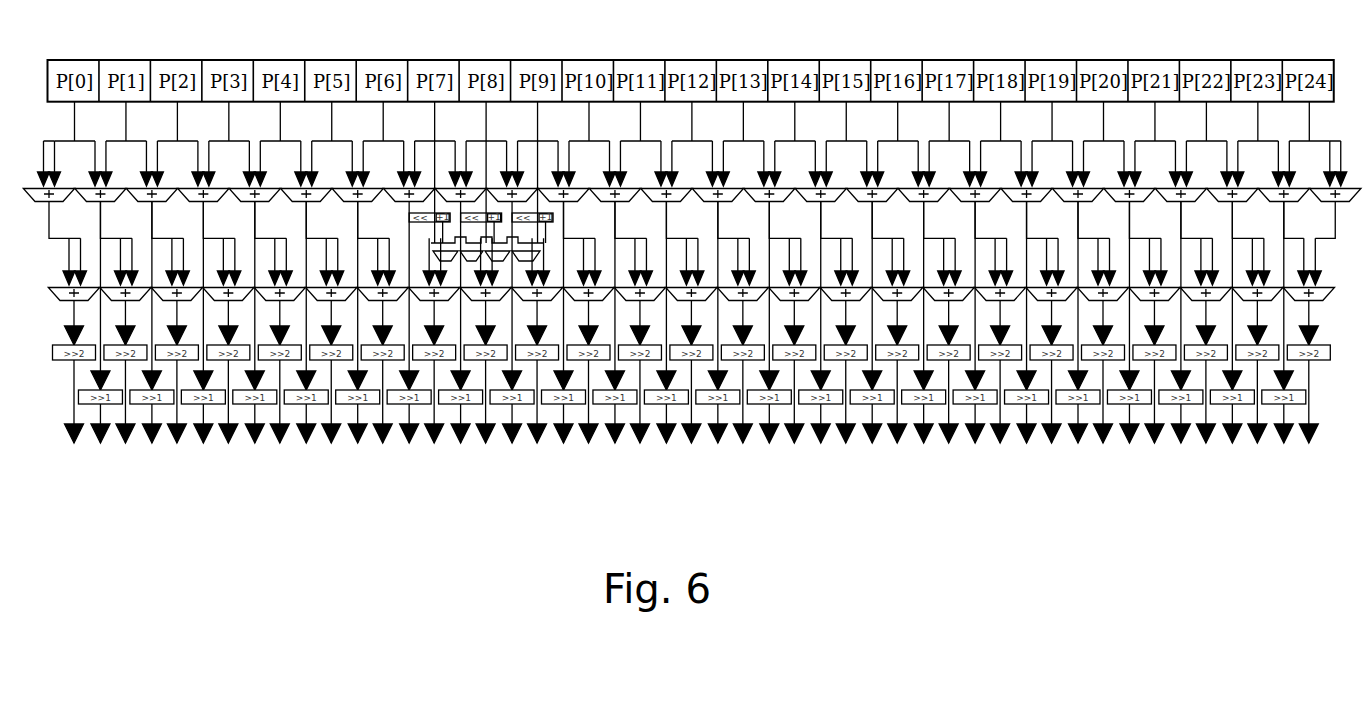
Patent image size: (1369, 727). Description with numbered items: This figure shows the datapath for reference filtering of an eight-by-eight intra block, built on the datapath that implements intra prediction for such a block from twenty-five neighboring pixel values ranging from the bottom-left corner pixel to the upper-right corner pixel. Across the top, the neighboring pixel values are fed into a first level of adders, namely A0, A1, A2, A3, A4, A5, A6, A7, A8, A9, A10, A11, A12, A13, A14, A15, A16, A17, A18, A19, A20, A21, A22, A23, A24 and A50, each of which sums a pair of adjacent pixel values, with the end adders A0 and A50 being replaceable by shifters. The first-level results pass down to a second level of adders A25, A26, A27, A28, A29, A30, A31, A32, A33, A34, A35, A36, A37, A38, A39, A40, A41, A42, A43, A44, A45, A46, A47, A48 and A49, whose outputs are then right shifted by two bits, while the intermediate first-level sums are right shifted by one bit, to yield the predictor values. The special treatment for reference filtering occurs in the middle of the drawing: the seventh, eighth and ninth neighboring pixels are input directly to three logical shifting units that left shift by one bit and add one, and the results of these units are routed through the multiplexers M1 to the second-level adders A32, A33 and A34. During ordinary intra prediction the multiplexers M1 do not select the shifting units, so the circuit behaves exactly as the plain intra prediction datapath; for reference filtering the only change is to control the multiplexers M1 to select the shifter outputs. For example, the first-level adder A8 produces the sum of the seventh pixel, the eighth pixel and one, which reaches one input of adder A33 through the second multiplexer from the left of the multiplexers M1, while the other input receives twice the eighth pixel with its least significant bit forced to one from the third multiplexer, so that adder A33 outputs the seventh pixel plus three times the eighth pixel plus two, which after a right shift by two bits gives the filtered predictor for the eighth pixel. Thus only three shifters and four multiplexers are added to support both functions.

The adder A0 is at (48, 203).
The adder A1 is at (100, 203).
The adder A2 is at (151, 203).
The adder A3 is at (203, 203).
The adder A4 is at (254, 203).
The adder A5 is at (306, 203).
The adder A6 is at (357, 203).
The adder A7 is at (408, 202).
The adder A8 is at (460, 202).
The adder A9 is at (511, 202).
The adder A10 is at (564, 203).
The adder A11 is at (615, 203).
The adder A12 is at (667, 203).
The adder A13 is at (718, 203).
The adder A14 is at (770, 203).
The adder A15 is at (821, 203).
The adder A16 is at (873, 203).
The adder A17 is at (924, 203).
The adder A18 is at (975, 203).
The adder A19 is at (1027, 203).
The adder A20 is at (1078, 203).
The adder A21 is at (1130, 203).
The adder A22 is at (1181, 203).
The adder A23 is at (1233, 203).
The adder A24 is at (1284, 203).
The adder A25 is at (73, 301).
The adder A26 is at (125, 301).
The adder A27 is at (176, 301).
The adder A28 is at (228, 301).
The adder A29 is at (279, 301).
The adder A30 is at (331, 301).
The adder A31 is at (382, 301).
The adder A32 is at (433, 301).
The adder A33 is at (485, 301).
The adder A34 is at (536, 301).
The adder A35 is at (588, 301).
The adder A36 is at (639, 301).
The adder A37 is at (691, 301).
The adder A38 is at (742, 301).
The adder A39 is at (794, 301).
The adder A40 is at (845, 301).
The adder A41 is at (897, 301).
The adder A42 is at (948, 301).
The adder A43 is at (999, 301).
The adder A44 is at (1051, 301).
The adder A45 is at (1102, 301).
The adder A46 is at (1154, 301).
The adder A47 is at (1205, 301).
The adder A48 is at (1257, 301).
The adder A49 is at (1308, 301).
The adder A50 is at (1336, 203).
The multiplexers M1 is at (487, 253).